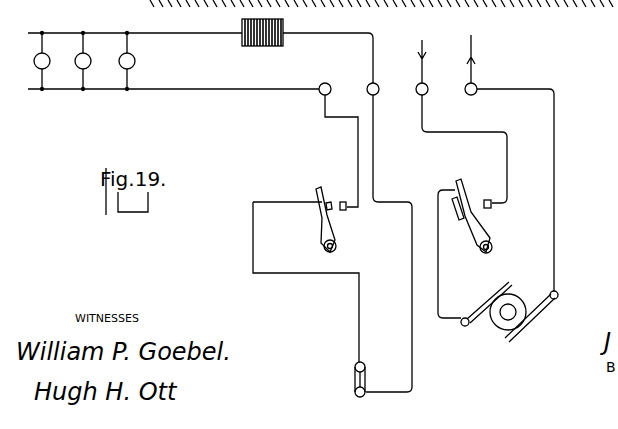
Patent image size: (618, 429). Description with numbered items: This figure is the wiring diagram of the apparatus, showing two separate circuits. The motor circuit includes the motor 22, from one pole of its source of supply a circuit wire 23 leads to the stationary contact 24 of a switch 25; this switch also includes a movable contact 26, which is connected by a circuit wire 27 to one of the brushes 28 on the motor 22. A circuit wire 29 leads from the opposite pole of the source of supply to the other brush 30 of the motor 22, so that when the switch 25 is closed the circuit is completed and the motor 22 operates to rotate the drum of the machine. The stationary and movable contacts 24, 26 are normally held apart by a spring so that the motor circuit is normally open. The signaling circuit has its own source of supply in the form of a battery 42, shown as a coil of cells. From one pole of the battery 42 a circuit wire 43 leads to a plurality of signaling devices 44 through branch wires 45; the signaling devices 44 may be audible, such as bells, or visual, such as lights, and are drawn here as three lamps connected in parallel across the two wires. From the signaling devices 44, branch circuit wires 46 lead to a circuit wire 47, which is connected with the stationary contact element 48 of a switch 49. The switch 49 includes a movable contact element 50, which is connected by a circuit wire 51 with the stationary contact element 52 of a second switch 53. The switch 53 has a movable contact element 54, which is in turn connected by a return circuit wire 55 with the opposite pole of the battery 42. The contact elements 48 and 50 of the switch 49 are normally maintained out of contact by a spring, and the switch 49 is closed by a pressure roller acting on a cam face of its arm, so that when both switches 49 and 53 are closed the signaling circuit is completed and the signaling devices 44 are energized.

The motor 22 is at (500, 331).
The circuit wire 23 is at (465, 131).
The stationary contact 24 is at (491, 210).
The switch 25 is at (474, 206).
The movable contact 26 is at (467, 188).
The circuit wire 27 is at (438, 270).
The brush 28 is at (487, 302).
The circuit wire 29 is at (556, 198).
The brush 30 is at (538, 313).
The battery 42 is at (284, 44).
The circuit wire 43 is at (196, 28).
The signaling devices 44 is at (49, 57).
The branch wires 45 is at (47, 42).
The branch circuit wires 46 is at (82, 78).
The circuit wire 47 is at (201, 91).
The stationary contact element 48 is at (343, 201).
The switch 49 is at (315, 221).
The movable contact element 50 is at (333, 197).
The circuit wire 51 is at (358, 295).
The stationary contact element 52 is at (365, 368).
The switch 53 is at (349, 383).
The movable contact element 54 is at (366, 380).
The return circuit wire 55 is at (412, 314).